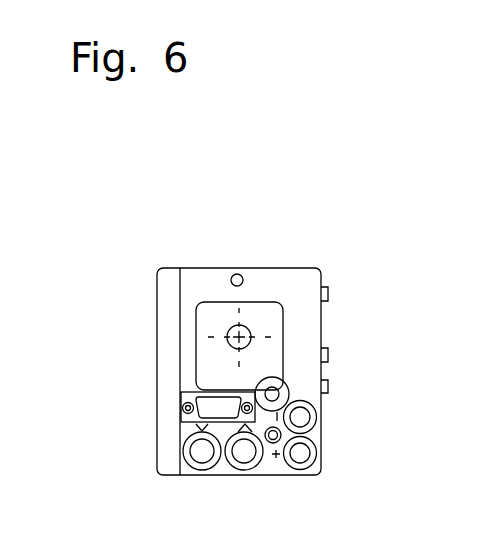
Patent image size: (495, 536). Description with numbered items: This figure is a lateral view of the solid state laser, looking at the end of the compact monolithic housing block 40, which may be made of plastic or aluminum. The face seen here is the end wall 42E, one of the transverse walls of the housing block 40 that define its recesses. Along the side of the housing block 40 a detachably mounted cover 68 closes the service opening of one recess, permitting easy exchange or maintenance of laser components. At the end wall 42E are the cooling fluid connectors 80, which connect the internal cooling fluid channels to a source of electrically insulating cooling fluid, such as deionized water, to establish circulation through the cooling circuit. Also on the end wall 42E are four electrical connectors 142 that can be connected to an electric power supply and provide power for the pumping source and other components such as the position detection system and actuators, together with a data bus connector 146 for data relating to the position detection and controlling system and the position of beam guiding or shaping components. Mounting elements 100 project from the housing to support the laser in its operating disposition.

The housing block 40 is at (212, 285).
The cover 68 is at (167, 350).
The end wall 42E is at (302, 292).
The mounting elements 100 is at (328, 387).
The data bus connector 146 is at (218, 409).
The cooling fluid connectors 80 is at (240, 454).
The electrical connectors 142 is at (302, 453).